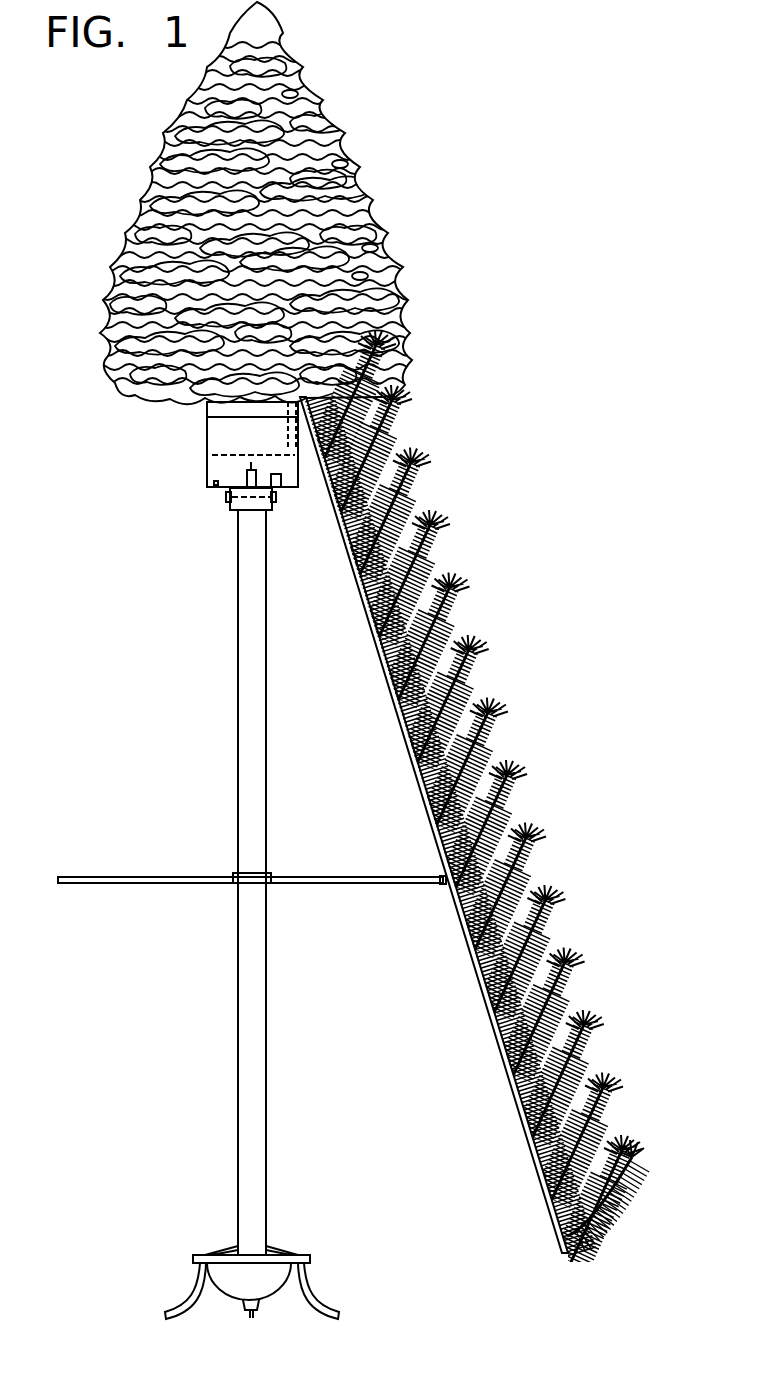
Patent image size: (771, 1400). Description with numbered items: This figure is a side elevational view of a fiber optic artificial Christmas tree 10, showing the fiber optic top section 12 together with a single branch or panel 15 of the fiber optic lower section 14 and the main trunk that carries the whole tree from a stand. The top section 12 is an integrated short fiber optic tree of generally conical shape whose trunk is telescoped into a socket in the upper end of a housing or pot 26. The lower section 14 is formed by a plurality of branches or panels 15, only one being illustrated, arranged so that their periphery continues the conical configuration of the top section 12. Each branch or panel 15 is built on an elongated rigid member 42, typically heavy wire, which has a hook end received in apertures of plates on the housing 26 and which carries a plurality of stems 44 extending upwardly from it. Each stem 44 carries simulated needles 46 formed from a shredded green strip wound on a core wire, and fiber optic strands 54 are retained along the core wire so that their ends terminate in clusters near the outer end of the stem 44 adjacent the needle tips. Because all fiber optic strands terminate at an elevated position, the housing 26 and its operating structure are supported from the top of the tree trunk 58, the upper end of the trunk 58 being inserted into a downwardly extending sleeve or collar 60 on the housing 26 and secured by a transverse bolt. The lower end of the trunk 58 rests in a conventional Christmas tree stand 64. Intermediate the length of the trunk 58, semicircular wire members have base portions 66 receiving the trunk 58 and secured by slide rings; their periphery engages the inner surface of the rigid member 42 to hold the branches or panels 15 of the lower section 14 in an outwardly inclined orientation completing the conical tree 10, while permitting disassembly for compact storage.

The fiber optic artificial Christmas tree 10 is at (469, 796).
The fiber optic top section 12 is at (392, 176).
The fiber optic lower section 14 is at (469, 796).
The branch or panel 15 is at (431, 825).
The housing or pot 26 is at (207, 438).
The elongated rigid member 42 is at (470, 948).
The stem 44 is at (511, 813).
The simulated needles 46 is at (531, 882).
The fiber optic strands 54 is at (521, 777).
The tree trunk 58 is at (245, 690).
The sleeve or collar 60 is at (244, 505).
The Christmas tree stand 64 is at (265, 1280).
The base portions 66 is at (122, 880).